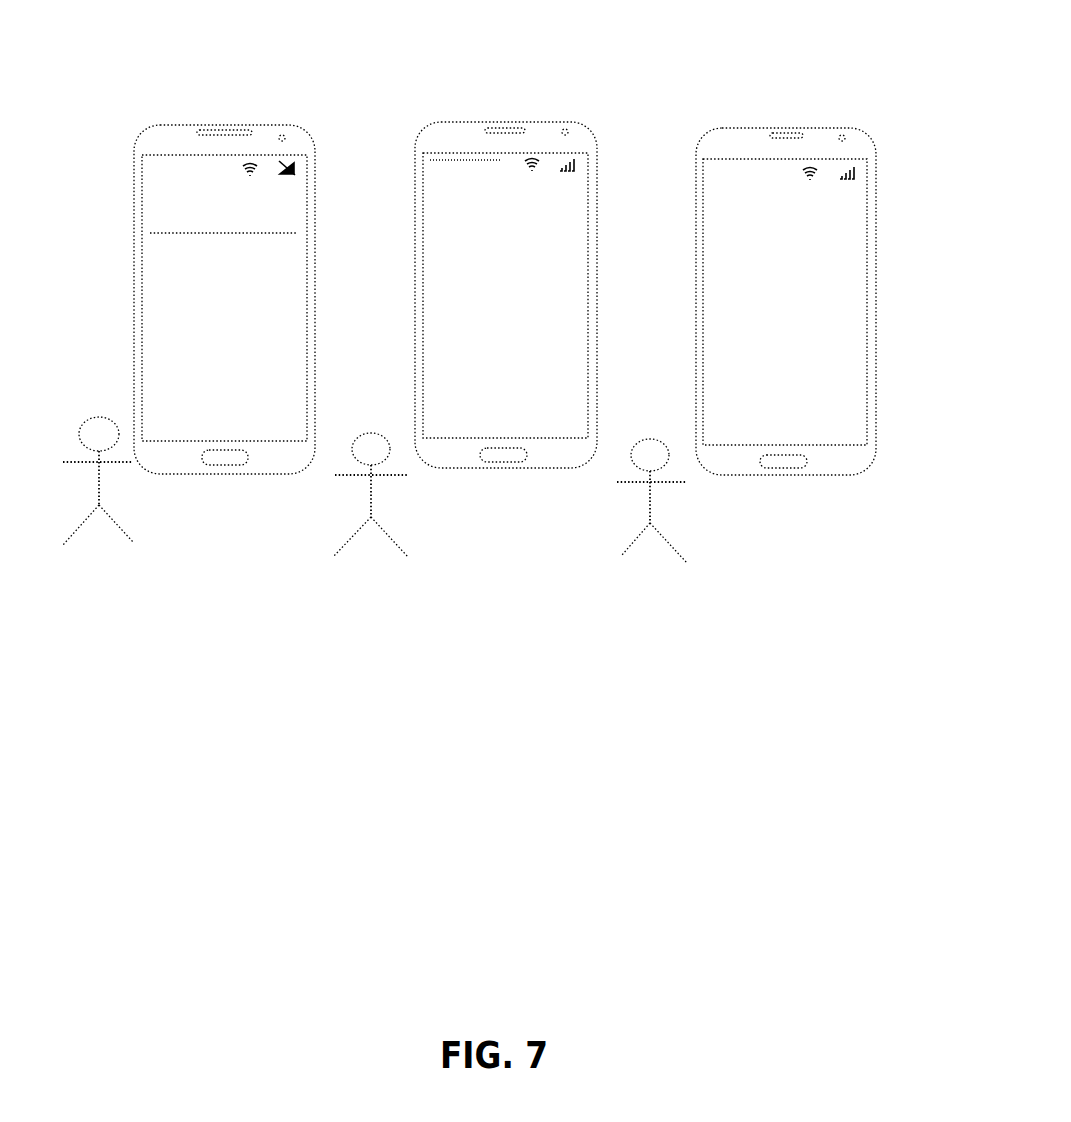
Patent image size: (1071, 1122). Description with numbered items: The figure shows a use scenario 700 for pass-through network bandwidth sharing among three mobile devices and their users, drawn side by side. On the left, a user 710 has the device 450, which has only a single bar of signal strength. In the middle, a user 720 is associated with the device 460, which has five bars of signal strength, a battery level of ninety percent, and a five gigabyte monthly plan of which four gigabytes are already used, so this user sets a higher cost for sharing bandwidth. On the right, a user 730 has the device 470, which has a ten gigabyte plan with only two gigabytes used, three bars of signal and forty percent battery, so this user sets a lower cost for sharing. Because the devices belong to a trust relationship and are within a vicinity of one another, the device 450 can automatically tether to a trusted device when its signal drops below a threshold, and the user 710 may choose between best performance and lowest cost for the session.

The use scenario 700 is at (147, 100).
The device 450 is at (300, 128).
The device 460 is at (577, 127).
The device 470 is at (863, 137).
The user 710 is at (148, 513).
The user 720 is at (412, 520).
The user 730 is at (685, 520).